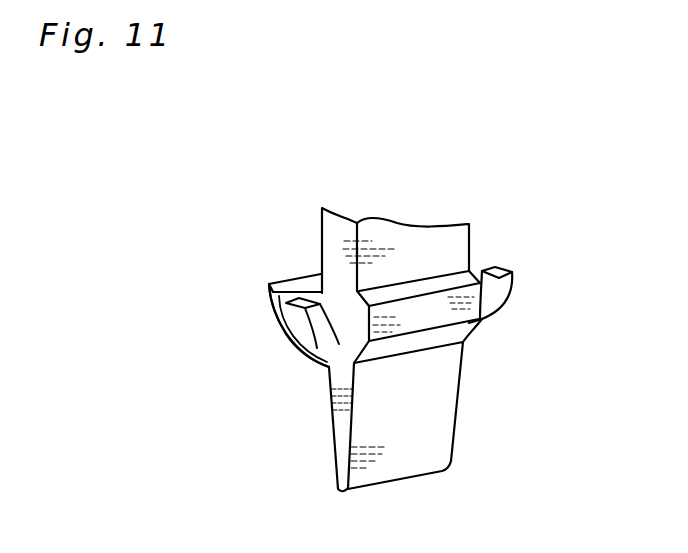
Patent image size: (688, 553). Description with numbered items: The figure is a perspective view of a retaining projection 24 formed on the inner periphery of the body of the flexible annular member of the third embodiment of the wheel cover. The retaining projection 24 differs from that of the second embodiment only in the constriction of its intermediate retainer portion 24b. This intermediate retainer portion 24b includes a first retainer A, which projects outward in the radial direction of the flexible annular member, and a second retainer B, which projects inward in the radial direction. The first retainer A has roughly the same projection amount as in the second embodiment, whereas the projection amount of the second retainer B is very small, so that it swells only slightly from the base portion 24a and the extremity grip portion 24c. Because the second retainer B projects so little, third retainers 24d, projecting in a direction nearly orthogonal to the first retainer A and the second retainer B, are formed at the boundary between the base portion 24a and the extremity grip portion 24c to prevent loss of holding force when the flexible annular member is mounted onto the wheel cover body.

The retaining projection 24 is at (463, 213).
The base portion 24a is at (320, 233).
The intermediate retainer portion 24b is at (181, 272).
The extremity grip portion 24c is at (333, 447).
The third retainers 24d is at (500, 303).
The first retainer A is at (267, 289).
The second retainer B is at (327, 366).